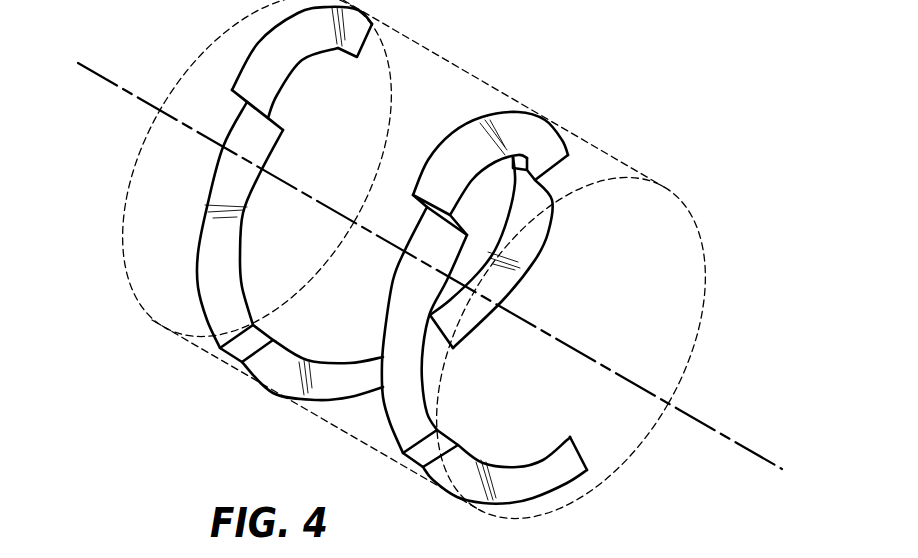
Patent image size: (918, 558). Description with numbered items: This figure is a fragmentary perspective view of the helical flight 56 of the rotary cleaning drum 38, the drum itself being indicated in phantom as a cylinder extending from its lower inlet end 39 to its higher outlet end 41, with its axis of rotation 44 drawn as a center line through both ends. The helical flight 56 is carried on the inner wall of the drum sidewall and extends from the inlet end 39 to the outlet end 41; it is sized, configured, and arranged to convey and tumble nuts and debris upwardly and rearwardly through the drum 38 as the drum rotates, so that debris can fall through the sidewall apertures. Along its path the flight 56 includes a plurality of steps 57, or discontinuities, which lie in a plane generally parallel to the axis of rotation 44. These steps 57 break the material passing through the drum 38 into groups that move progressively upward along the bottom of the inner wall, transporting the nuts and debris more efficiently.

The cleaning drum 38 is at (609, 153).
The inlet end 39 is at (639, 477).
The outlet end 41 is at (168, 127).
The axis of rotation 44 is at (188, 127).
The helical flight 56 is at (546, 119).
The steps 57 is at (278, 121).